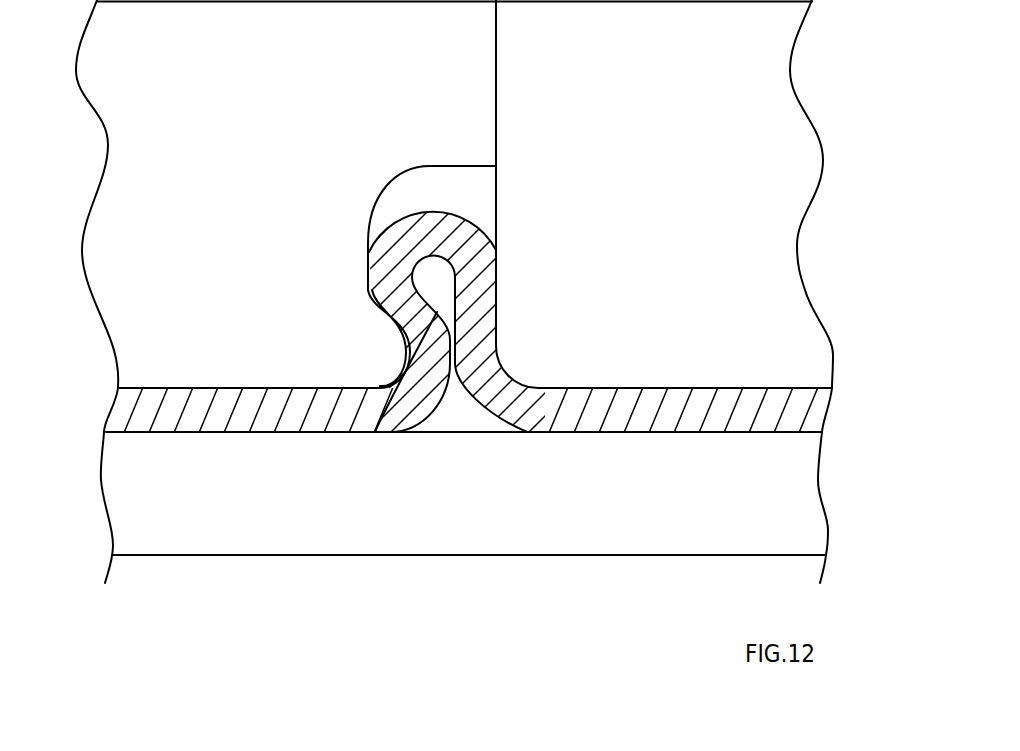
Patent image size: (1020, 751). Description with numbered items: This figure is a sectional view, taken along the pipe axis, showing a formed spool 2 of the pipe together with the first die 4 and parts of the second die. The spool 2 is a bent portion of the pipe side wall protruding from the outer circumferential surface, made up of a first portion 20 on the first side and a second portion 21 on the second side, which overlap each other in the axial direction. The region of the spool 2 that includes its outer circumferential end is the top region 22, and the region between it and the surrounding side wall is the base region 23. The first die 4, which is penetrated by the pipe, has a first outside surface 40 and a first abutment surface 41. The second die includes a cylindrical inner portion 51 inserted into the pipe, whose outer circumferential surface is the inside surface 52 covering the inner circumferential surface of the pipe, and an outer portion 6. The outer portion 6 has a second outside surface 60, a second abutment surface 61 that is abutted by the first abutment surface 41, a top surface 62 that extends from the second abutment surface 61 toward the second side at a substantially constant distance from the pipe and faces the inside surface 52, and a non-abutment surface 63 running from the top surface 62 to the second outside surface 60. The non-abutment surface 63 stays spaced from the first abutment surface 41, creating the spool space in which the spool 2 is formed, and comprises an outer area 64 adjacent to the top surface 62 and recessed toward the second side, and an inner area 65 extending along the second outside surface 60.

The spool 2 is at (456, 420).
The first die 4 is at (760, 70).
The outer portion 6 is at (143, 142).
The first portion 20 is at (478, 311).
The second portion 21 is at (375, 432).
The top region 22 is at (518, 223).
The base region 23 is at (523, 352).
The first outside surface 40 is at (680, 388).
The first abutment surface 41 is at (496, 97).
The inner portion 51 is at (770, 488).
The inside surface 52 is at (426, 432).
The second outside surface 60 is at (157, 388).
The second abutment surface 61 is at (496, 60).
The top surface 62 is at (455, 166).
The non-abutment surface 63 is at (292, 215).
The outer area 64 is at (368, 242).
The inner area 65 is at (403, 347).